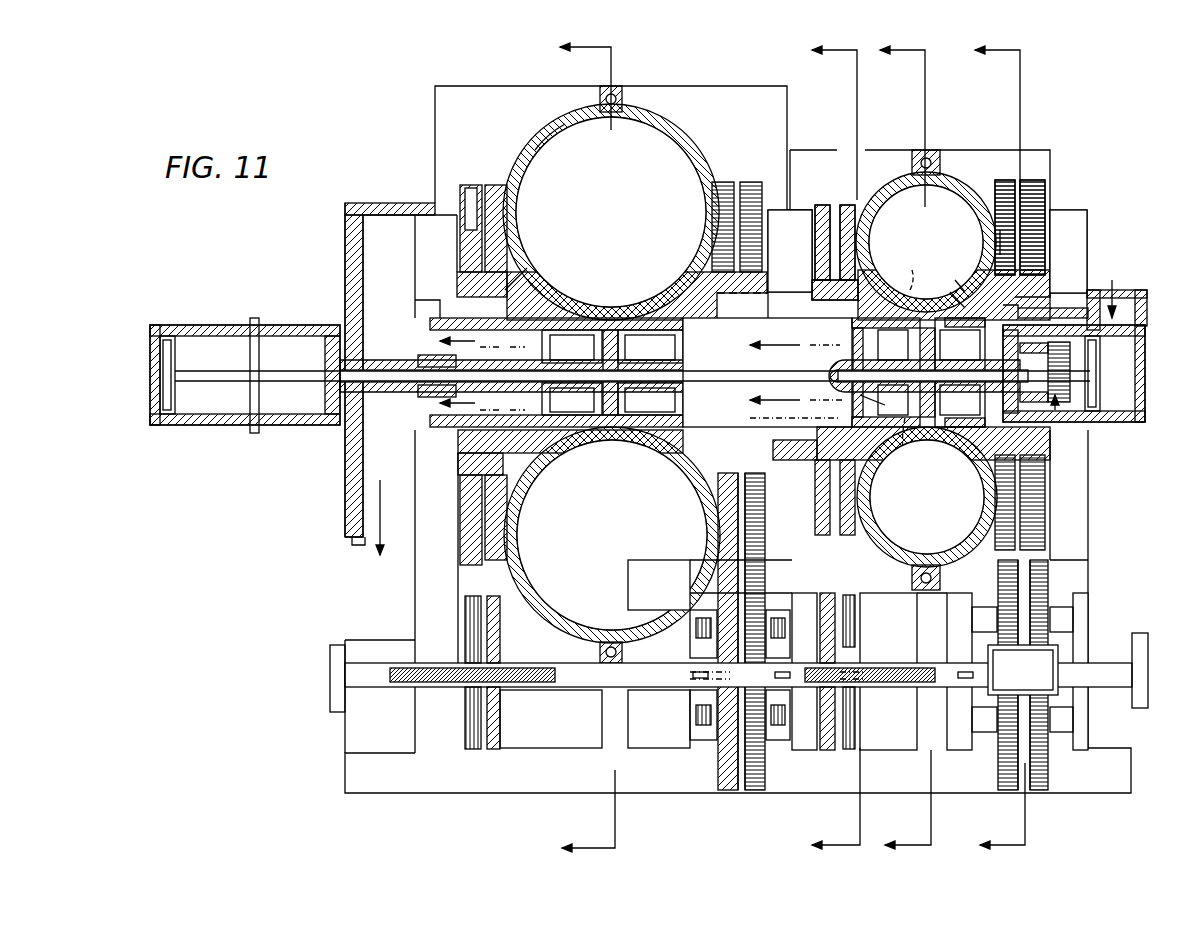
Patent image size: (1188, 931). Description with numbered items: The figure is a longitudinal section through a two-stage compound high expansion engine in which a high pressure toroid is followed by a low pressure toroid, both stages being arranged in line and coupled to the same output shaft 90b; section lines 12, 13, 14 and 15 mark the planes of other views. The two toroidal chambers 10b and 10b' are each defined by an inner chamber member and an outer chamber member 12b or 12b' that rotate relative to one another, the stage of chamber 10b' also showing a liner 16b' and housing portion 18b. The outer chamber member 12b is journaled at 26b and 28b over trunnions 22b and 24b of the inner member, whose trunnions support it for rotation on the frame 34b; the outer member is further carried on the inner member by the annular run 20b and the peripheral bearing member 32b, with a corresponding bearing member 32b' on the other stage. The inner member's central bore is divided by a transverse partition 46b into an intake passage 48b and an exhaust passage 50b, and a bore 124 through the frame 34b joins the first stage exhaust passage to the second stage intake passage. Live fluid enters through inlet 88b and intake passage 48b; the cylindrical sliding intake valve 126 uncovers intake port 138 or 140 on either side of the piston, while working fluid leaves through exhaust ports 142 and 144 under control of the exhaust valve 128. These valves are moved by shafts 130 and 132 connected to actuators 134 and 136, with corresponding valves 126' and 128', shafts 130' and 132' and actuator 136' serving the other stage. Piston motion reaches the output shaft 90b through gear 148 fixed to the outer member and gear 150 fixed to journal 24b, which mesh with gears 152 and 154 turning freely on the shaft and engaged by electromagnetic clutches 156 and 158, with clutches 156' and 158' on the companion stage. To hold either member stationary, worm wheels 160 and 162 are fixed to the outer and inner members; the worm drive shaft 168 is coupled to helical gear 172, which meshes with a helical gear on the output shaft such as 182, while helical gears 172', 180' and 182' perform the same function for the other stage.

The toroidal chamber 10b is at (926, 242).
The toroidal chamber 10b' is at (611, 212).
The outer chamber member 12b is at (931, 214).
The outer chamber member 12b' is at (621, 210).
The sleeve liner 16b' is at (562, 146).
The housing block 18b is at (525, 262).
The annular run 20b is at (1000, 230).
The trunnion 22b is at (828, 290).
The trunnion 24b is at (1055, 300).
The journal 26b is at (845, 258).
The journal 28b is at (1015, 250).
The peripheral bearing member 32b is at (939, 137).
The peripheral bearing member 32b' is at (638, 81).
The frame 34b is at (430, 725).
The transverse partition 46b is at (928, 332).
The intake passage 48b is at (935, 420).
The exhaust passage 50b is at (918, 470).
The inlet 88b is at (1113, 295).
The output shaft 90b is at (378, 672).
The bore 124 is at (758, 420).
The intake valve 126 is at (906, 375).
The intake valve 126' is at (572, 372).
The exhaust valve 128 is at (839, 394).
The exhaust valve 128' is at (650, 372).
The shaft 130 is at (1104, 373).
The shaft 130' is at (196, 392).
The shaft 132 is at (1067, 401).
The shaft 132' is at (401, 374).
The actuator 134 is at (182, 330).
The actuator 136 is at (1092, 383).
The actuator 136' is at (245, 400).
The intake port 138 is at (963, 276).
The intake port 140 is at (958, 290).
The exhaust port 142 is at (912, 280).
The exhaust port 144 is at (753, 304).
The gear 148 is at (1012, 185).
The gear 150 is at (1042, 212).
The gear 152 is at (1008, 790).
The gear 154 is at (1040, 790).
The electromagnetic clutch 156 is at (1001, 707).
The electromagnetic clutch 156' is at (715, 675).
The electromagnetic clutch 158 is at (1049, 664).
The electromagnetic clutch 158' is at (766, 631).
The worm wheel 160 is at (848, 205).
The worm wheel 162 is at (822, 205).
The shaft 168 is at (850, 720).
The helical gear 172 is at (870, 638).
The helical gear 172' is at (486, 699).
The helical gear 180' is at (440, 691).
The helical gear 182 is at (802, 664).
The helical gear 182' is at (493, 714).
The section line 12 is at (584, 446).
The section line 13 is at (905, 441).
The section line 14 is at (837, 441).
The section line 15 is at (1000, 441).